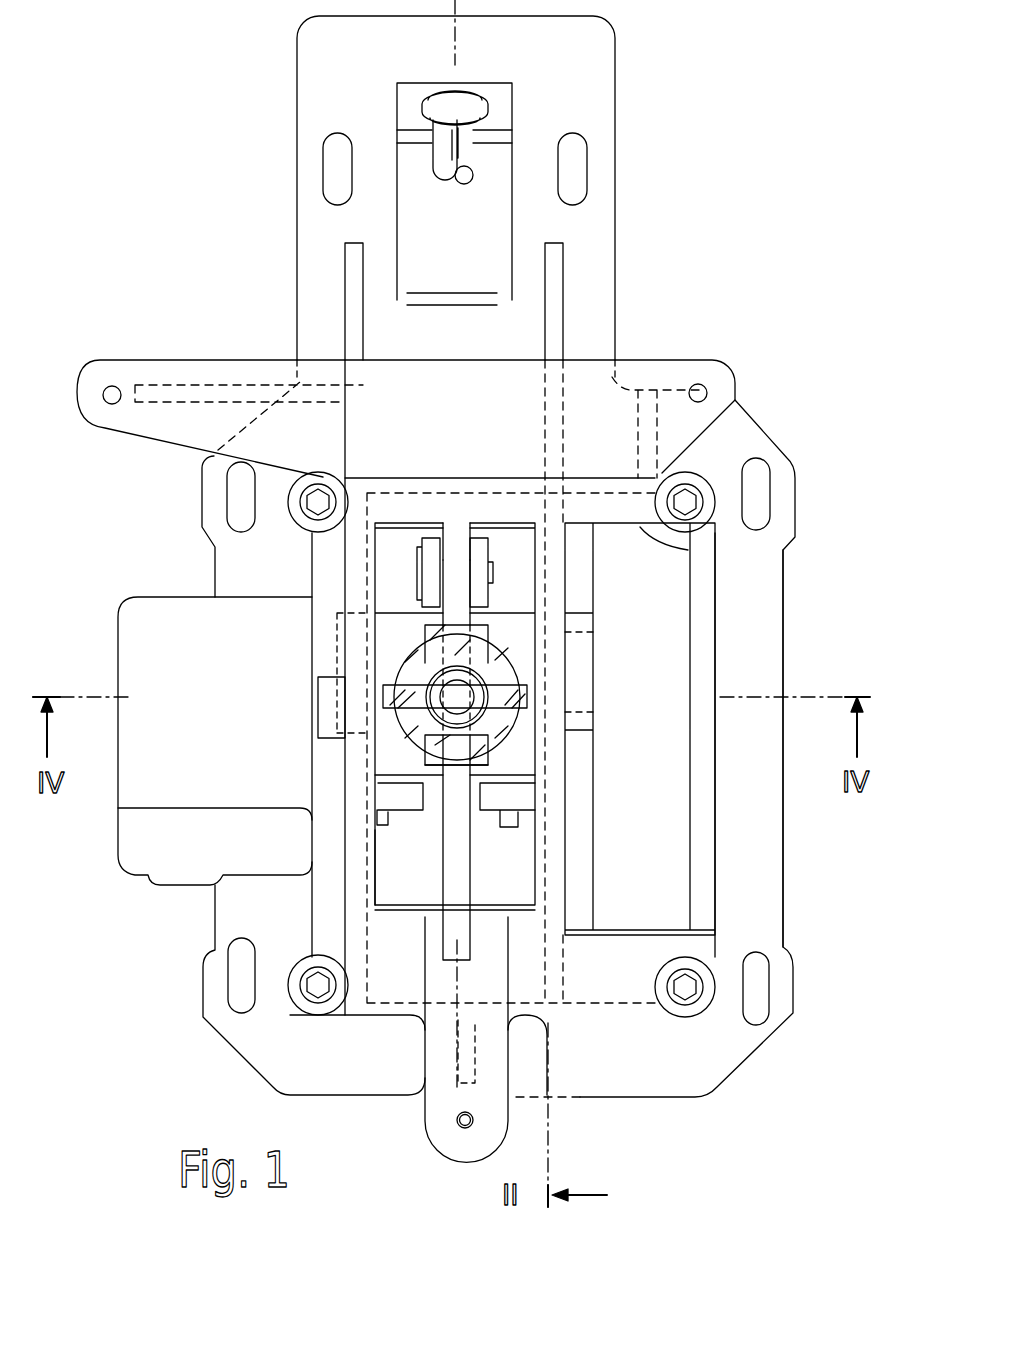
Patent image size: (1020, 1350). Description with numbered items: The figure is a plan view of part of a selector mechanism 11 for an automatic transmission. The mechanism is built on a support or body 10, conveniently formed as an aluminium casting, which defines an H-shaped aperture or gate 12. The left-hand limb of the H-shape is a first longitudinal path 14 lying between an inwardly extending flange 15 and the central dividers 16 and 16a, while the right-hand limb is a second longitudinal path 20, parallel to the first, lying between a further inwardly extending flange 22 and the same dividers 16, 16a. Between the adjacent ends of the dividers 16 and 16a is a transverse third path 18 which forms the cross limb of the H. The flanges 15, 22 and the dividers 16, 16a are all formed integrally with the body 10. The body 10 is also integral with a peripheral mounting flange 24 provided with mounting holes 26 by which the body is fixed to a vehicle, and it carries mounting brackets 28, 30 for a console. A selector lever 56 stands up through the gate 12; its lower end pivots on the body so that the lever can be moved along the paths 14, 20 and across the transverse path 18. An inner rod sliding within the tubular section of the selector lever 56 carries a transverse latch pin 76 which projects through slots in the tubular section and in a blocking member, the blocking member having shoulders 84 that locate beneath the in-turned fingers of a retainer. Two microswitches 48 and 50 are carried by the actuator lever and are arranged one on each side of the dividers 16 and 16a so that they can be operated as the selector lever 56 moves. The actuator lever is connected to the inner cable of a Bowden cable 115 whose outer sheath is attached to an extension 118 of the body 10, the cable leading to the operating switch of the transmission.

The body 10 is at (798, 863).
The selector mechanism 11 is at (740, 346).
The H-shaped aperture or gate 12 is at (506, 846).
The first longitudinal path 14 is at (389, 843).
The inwardly extending flange 15 is at (358, 598).
The central divider 16 is at (470, 895).
The central divider 16a is at (455, 553).
The transverse third path 18 is at (482, 672).
The second longitudinal path 20 is at (518, 573).
The further inwardly extending flange 22 is at (553, 755).
The peripheral mounting flange 24 is at (757, 598).
The mounting holes 26 is at (236, 480).
The mounting bracket 28 is at (688, 372).
The mounting bracket 30 is at (446, 1134).
The microswitch 48 is at (392, 793).
The microswitch 50 is at (523, 798).
The selector lever 56 is at (438, 710).
The transverse latch pin 76 is at (513, 700).
The shoulders 84 is at (438, 770).
The Bowden cable 115 is at (472, 170).
The extension of the body 118 is at (600, 147).